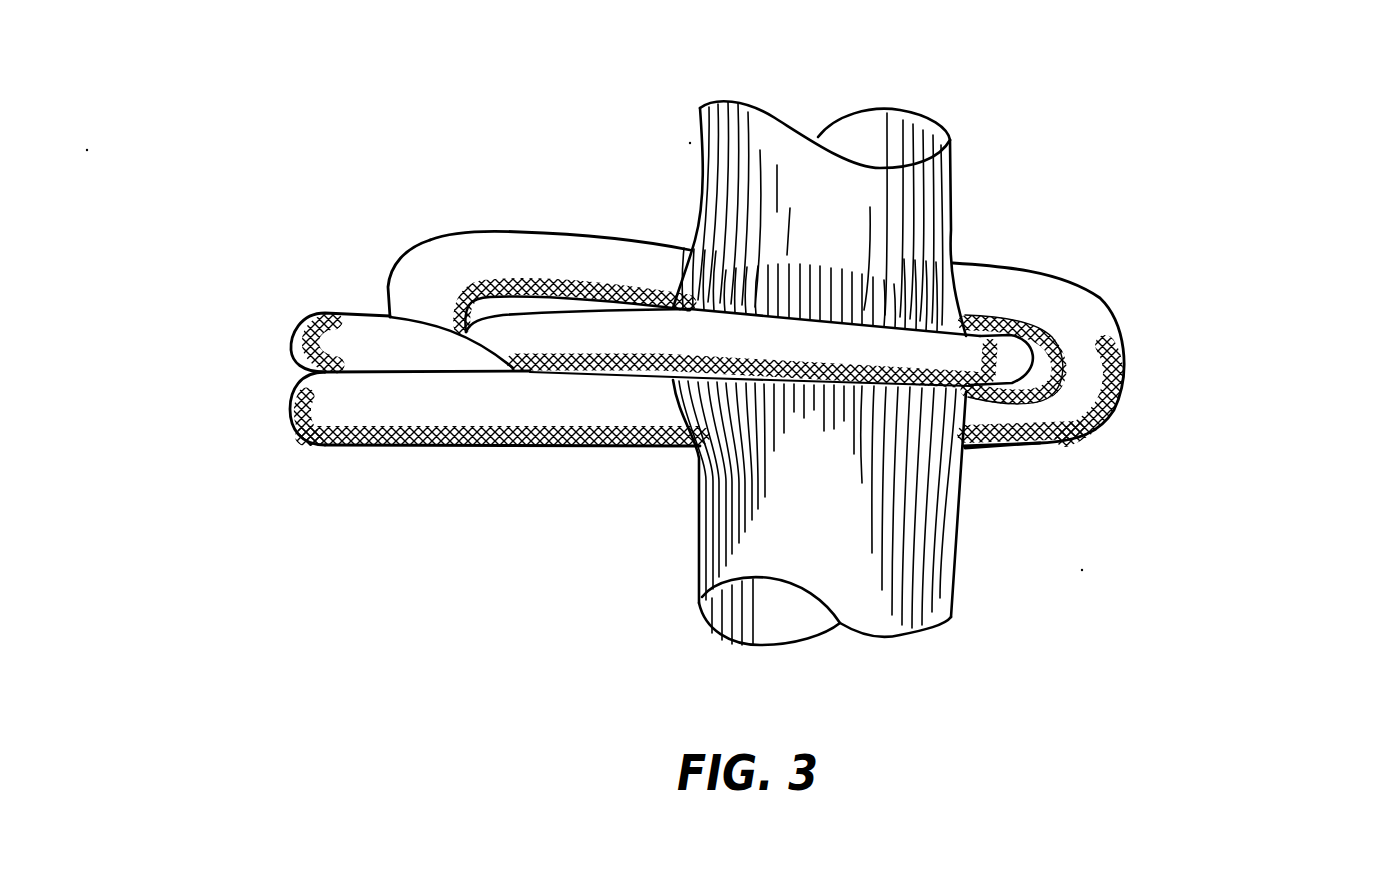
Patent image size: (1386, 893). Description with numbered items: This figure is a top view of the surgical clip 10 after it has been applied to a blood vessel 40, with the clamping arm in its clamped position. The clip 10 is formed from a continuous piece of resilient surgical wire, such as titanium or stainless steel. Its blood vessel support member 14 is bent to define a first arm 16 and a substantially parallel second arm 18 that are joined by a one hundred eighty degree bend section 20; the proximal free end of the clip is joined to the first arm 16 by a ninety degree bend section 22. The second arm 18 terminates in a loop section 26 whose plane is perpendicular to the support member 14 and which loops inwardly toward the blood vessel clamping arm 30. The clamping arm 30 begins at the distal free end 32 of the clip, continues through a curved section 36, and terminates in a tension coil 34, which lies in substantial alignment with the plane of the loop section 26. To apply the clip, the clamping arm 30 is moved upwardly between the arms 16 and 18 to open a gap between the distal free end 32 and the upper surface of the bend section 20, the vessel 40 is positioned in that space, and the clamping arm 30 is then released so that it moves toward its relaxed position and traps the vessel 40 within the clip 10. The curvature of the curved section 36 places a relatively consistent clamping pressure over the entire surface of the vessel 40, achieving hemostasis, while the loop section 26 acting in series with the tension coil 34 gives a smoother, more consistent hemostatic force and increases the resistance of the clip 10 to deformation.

The surgical clip 10 is at (1150, 352).
The blood vessel support member 14 is at (1098, 297).
The first arm 16 is at (552, 252).
The second arm 18 is at (488, 448).
The one hundred eighty degree bend section 20 is at (1080, 378).
The ninety degree bend section 22 is at (432, 278).
The loop section 26 is at (323, 410).
The blood vessel clamping arm 30 is at (993, 453).
The distal free end 32 is at (1033, 404).
The tension coil 34 is at (290, 348).
The curved section 36 is at (635, 348).
The blood vessel 40 is at (948, 222).